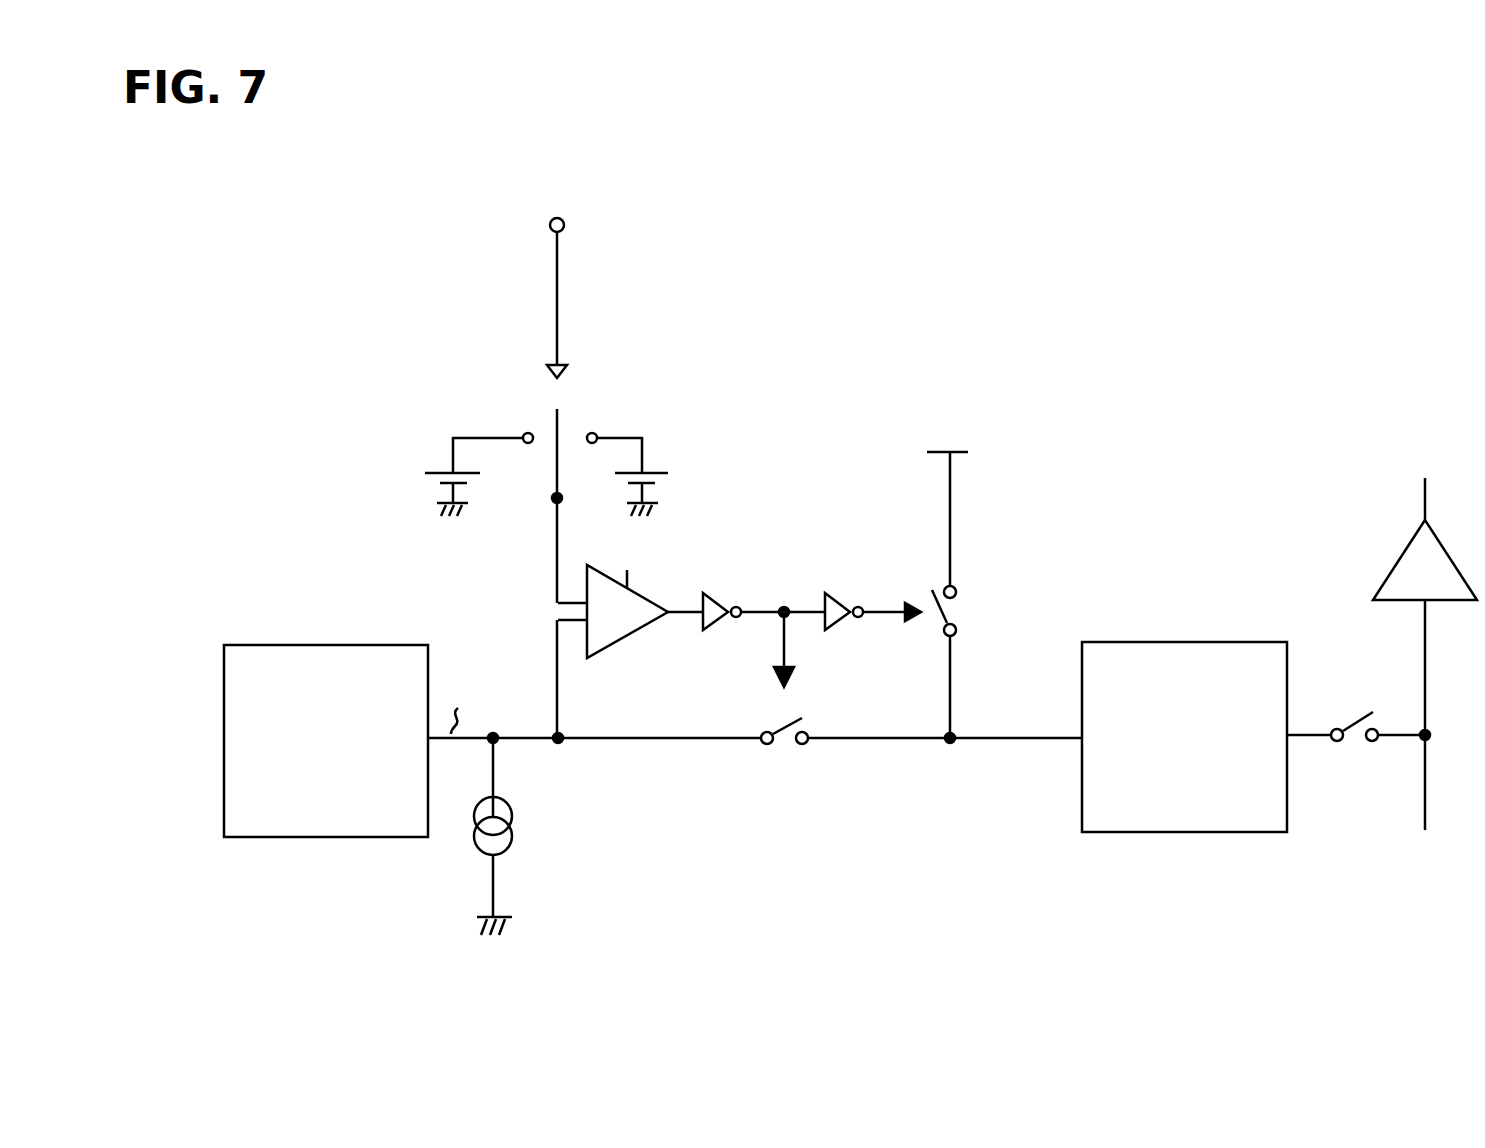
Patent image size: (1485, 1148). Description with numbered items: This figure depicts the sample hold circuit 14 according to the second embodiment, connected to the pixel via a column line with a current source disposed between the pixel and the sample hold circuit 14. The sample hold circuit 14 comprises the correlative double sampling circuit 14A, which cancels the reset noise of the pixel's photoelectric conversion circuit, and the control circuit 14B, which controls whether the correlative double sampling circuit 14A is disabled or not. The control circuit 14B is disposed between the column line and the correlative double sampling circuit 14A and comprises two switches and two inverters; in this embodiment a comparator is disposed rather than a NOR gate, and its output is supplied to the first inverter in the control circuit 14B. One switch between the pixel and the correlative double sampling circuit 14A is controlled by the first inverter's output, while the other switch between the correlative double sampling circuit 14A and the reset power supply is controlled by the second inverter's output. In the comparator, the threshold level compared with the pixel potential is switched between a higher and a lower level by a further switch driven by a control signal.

The sample hold circuit 14 is at (1437, 293).
The correlative double sampling circuit 14A is at (1170, 642).
The control circuit 14B is at (790, 420).